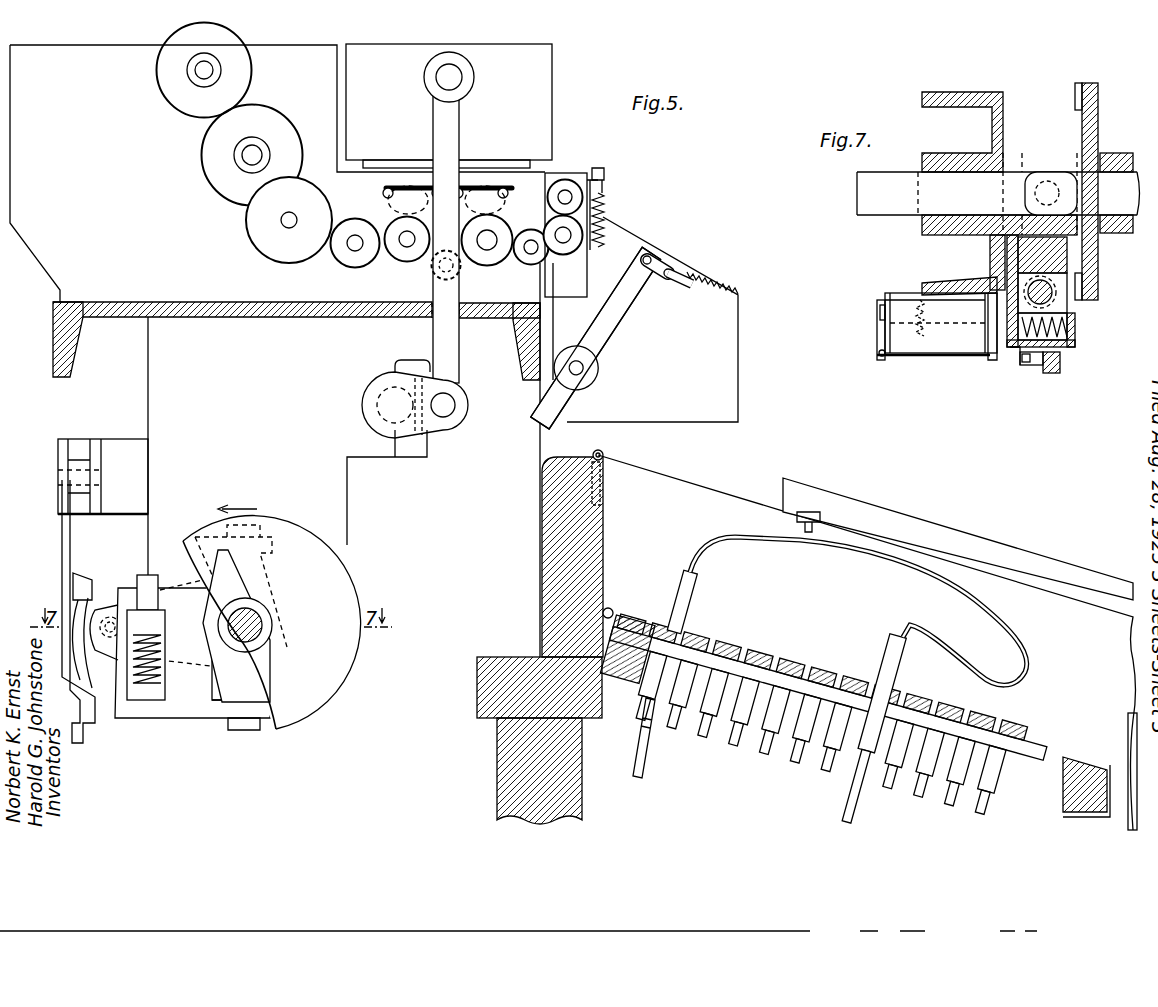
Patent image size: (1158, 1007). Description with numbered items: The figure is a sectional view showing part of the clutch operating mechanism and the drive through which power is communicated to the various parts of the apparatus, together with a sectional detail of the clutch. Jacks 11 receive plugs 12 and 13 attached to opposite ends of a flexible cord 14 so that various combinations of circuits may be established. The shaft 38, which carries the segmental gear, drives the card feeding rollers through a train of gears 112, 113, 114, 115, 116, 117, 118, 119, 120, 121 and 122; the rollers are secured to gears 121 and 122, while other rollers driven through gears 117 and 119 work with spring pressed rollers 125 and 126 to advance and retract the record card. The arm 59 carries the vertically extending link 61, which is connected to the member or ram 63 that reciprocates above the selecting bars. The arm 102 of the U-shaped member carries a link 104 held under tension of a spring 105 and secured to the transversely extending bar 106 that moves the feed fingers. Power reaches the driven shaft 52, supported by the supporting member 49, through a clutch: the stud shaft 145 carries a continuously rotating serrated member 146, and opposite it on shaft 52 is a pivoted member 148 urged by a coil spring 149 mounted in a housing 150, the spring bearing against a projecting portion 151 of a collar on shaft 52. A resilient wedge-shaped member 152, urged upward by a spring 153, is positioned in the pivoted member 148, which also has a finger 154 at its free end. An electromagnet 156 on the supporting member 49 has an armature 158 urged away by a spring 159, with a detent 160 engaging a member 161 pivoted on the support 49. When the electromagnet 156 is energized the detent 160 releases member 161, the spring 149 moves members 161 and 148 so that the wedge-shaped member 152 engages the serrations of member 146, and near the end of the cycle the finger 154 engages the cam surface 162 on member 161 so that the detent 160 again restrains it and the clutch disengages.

In FIG. 5, the jacks 11 is at (683, 637).
In FIG. 5, the plug 12 is at (687, 602).
In FIG. 5, the plug 13 is at (900, 670).
In FIG. 5, the flexible cord 14 is at (875, 562).
In FIG. 5, the shaft 38 is at (195, 70).
In FIG. 5, the supporting member 49 is at (333, 487).
In FIG. 7, the supporting member 49 is at (937, 92).
In FIG. 5, the shaft 52 is at (230, 637).
In FIG. 7, the shaft 52 is at (880, 195).
In FIG. 5, the arm 59 is at (430, 430).
In FIG. 5, the link 61 is at (448, 353).
In FIG. 5, the member or ram 63 is at (537, 92).
In FIG. 5, the arm 102 is at (605, 335).
In FIG. 5, the link 104 is at (648, 268).
In FIG. 5, the spring 105 is at (713, 290).
In FIG. 5, the bar 106 is at (685, 268).
In FIG. 5, the gear 112 is at (188, 98).
In FIG. 5, the gear 113 is at (218, 157).
In FIG. 5, the gear 114 is at (270, 212).
In FIG. 5, the gear 115 is at (257, 240).
In FIG. 5, the gear 116 is at (347, 230).
In FIG. 5, the gear 117 is at (397, 257).
In FIG. 5, the gear 118 is at (430, 273).
In FIG. 5, the gear 119 is at (490, 263).
In FIG. 5, the gear 120 is at (530, 262).
In FIG. 5, the gear 121 is at (570, 250).
In FIG. 5, the gear 122 is at (570, 177).
In FIG. 5, the spring pressed rollers 125 is at (402, 183).
In FIG. 5, the spring pressed rollers 126 is at (502, 183).
In FIG. 5, the stud shaft 145 is at (263, 617).
In FIG. 7, the stud shaft 145 is at (1107, 185).
In FIG. 5, the serrated member 146 is at (333, 678).
In FIG. 7, the serrated member 146 is at (1093, 128).
In FIG. 5, the pivoted member 148 is at (210, 713).
In FIG. 7, the pivoted member 148 is at (1055, 257).
In FIG. 7, the coil spring 149 is at (1063, 343).
In FIG. 7, the housing 150 is at (1072, 327).
In FIG. 7, the projecting portion 151 is at (1017, 270).
In FIG. 5, the wedge-shaped member 152 is at (157, 625).
In FIG. 7, the wedge-shaped member 152 is at (1060, 288).
In FIG. 5, the spring 153 is at (210, 713).
In FIG. 5, the finger 154 is at (70, 607).
In FIG. 7, the finger 154 is at (1033, 363).
In FIG. 7, the electromagnet 156 is at (945, 330).
In FIG. 7, the armature 158 is at (878, 337).
In FIG. 7, the spring 159 is at (882, 323).
In FIG. 5, the detent 160 is at (87, 717).
In FIG. 7, the detent 160 is at (1048, 378).
In FIG. 5, the pivoted member 161 is at (70, 530).
In FIG. 7, the pivoted member 161 is at (1037, 372).
In FIG. 5, the cam surface 162 is at (88, 597).